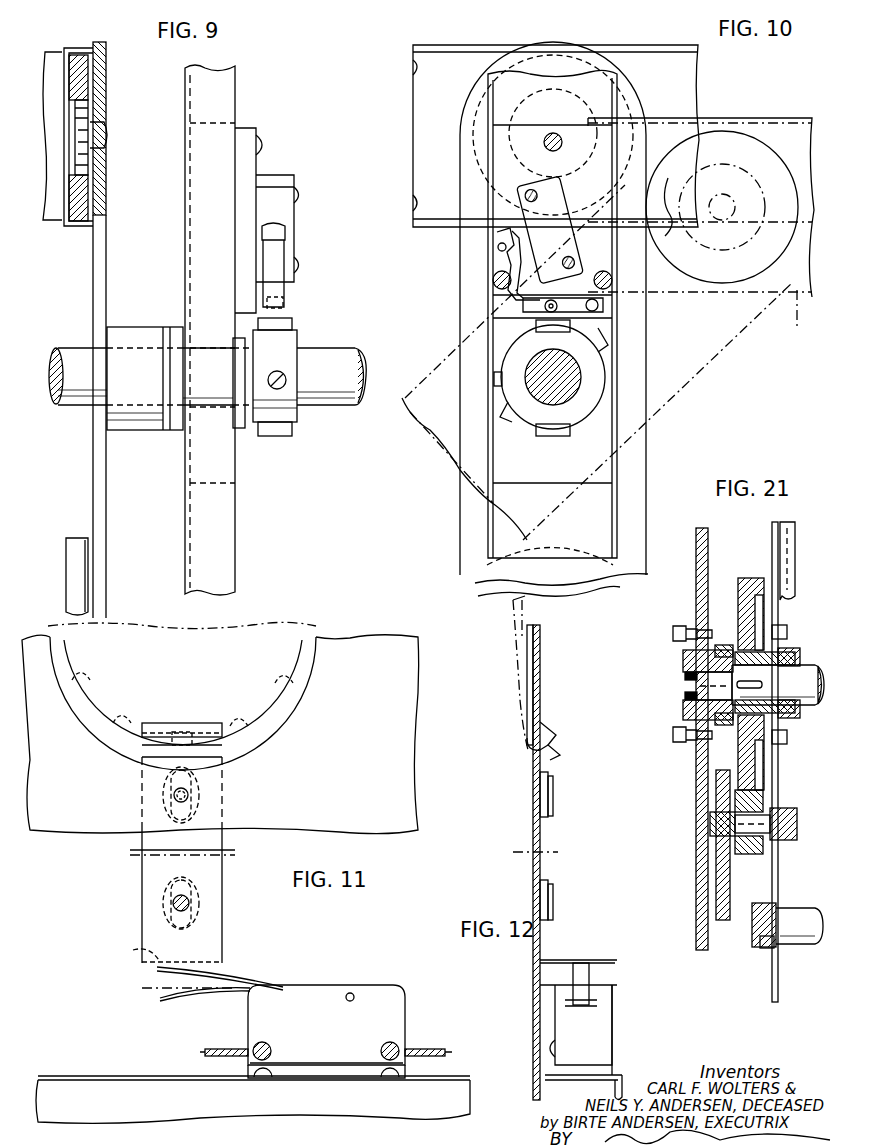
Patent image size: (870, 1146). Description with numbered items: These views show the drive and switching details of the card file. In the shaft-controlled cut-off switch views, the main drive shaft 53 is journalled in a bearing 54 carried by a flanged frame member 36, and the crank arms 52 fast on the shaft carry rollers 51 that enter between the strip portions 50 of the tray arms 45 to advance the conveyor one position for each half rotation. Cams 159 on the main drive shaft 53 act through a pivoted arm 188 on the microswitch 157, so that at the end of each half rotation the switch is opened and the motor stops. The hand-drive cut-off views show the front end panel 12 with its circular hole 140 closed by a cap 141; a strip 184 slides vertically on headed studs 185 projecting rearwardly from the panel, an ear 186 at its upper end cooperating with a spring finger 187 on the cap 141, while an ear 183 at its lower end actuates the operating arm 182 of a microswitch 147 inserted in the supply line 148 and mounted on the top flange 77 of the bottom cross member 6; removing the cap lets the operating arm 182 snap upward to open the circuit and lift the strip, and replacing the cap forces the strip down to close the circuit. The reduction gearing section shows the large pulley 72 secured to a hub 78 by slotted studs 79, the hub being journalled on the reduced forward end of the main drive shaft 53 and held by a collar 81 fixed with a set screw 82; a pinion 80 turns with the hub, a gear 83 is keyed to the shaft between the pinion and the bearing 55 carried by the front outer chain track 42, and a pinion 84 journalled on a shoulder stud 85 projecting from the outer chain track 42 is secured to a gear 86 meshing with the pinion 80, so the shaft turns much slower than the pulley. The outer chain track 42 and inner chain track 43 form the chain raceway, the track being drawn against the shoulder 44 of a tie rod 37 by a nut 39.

In FIG. 11, the bottom cross member 6 is at (172, 1106).
In FIG. 12, the bottom cross member 6 is at (622, 1092).
In FIG. 11, the front end panel 12 is at (342, 775).
In FIG. 12, the front end panel 12 is at (533, 1022).
In FIG. 9, the flanged frame member 36 is at (215, 568).
In FIG. 10, the flanged frame member 36 is at (488, 527).
In FIG. 21, the tie rod 37 is at (800, 938).
In FIG. 21, the nut 39 is at (765, 948).
In FIG. 21, the outer chain track 42 is at (772, 533).
In FIG. 21, the inner chain track 43 is at (788, 530).
In FIG. 21, the shoulder 44 is at (775, 915).
In FIG. 9, the tray arm 45 is at (50, 153).
In FIG. 10, the tray arm 45 is at (457, 104).
In FIG. 9, the strip portion 50 is at (72, 48).
In FIG. 10, the strip portion 50 is at (413, 72).
In FIG. 9, the roller 51 is at (93, 68).
In FIG. 10, the roller 51 is at (465, 150).
In FIG. 9, the crank arm 52 is at (98, 286).
In FIG. 10, the crank arm 52 is at (470, 283).
In FIG. 9, the main drive shaft 53 is at (330, 348).
In FIG. 10, the main drive shaft 53 is at (572, 388).
In FIG. 21, the main drive shaft 53 is at (805, 700).
In FIG. 9, the bearing 54 is at (238, 422).
In FIG. 10, the bearing 54 is at (553, 474).
In FIG. 21, the bearing 55 is at (788, 650).
In FIG. 21, the large pulley 72 is at (697, 862).
In FIG. 11, the top flange 77 is at (115, 1076).
In FIG. 12, the top flange 77 is at (565, 1080).
In FIG. 21, the hub 78 is at (683, 656).
In FIG. 21, the slotted stud 79 is at (680, 626).
In FIG. 21, the pinion 80 is at (722, 645).
In FIG. 21, the collar 81 is at (685, 706).
In FIG. 21, the set screw 82 is at (685, 684).
In FIG. 21, the gear 83 is at (748, 590).
In FIG. 21, the pinion 84 is at (750, 855).
In FIG. 21, the shoulder stud 85 is at (725, 824).
In FIG. 21, the gear 86 is at (724, 920).
In FIG. 11, the circular hole 140 is at (298, 650).
In FIG. 12, the circular hole 140 is at (540, 697).
In FIG. 11, the cap 141 is at (283, 625).
In FIG. 12, the cap 141 is at (517, 700).
In FIG. 11, the microswitch 147 is at (337, 1040).
In FIG. 12, the microswitch 147 is at (590, 1036).
In FIG. 11, the supply line 148 is at (222, 1050).
In FIG. 10, the microswitch 157 is at (566, 243).
In FIG. 9, the cam 159 is at (296, 327).
In FIG. 10, the cam 159 is at (538, 327).
In FIG. 11, the operating arm 182 is at (235, 972).
In FIG. 12, the operating arm 182 is at (588, 985).
In FIG. 11, the ear 183 is at (135, 950).
In FIG. 12, the ear 183 is at (612, 960).
In FIG. 11, the strip 184 is at (215, 930).
In FIG. 12, the strip 184 is at (545, 957).
In FIG. 11, the headed stud 185 is at (175, 795).
In FIG. 12, the headed stud 185 is at (550, 805).
In FIG. 11, the ear 186 is at (155, 722).
In FIG. 12, the ear 186 is at (548, 727).
In FIG. 11, the spring finger 187 is at (190, 735).
In FIG. 12, the spring finger 187 is at (552, 745).
In FIG. 10, the pivoted arm 188 is at (520, 302).